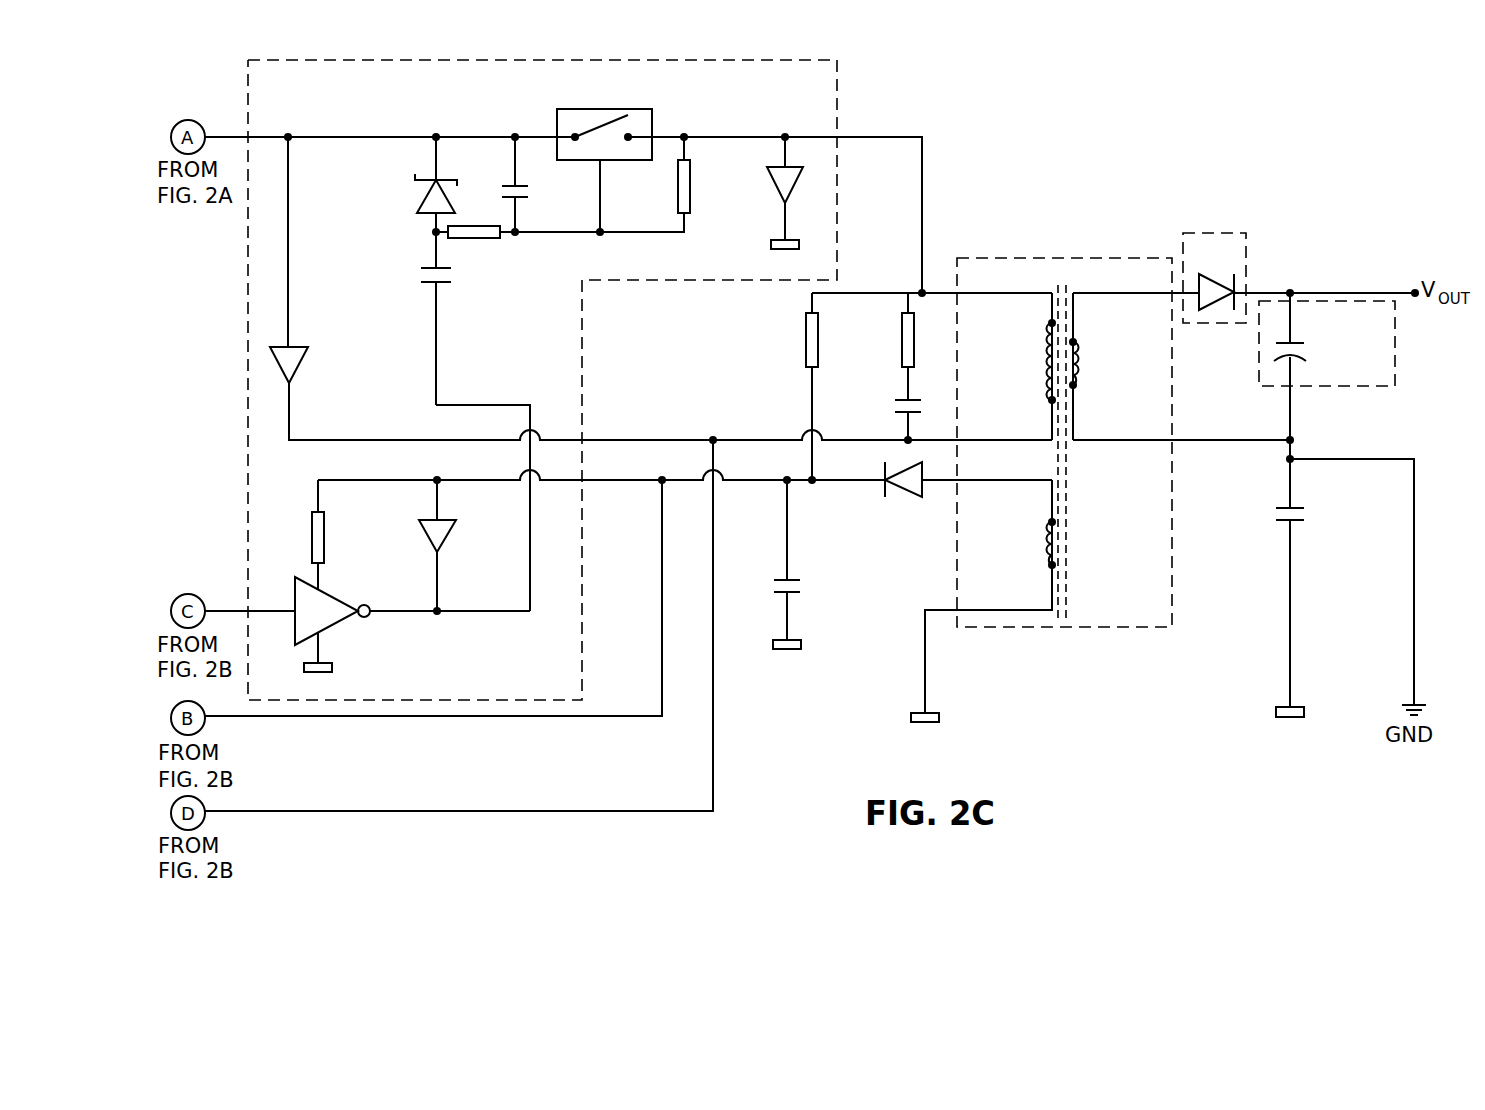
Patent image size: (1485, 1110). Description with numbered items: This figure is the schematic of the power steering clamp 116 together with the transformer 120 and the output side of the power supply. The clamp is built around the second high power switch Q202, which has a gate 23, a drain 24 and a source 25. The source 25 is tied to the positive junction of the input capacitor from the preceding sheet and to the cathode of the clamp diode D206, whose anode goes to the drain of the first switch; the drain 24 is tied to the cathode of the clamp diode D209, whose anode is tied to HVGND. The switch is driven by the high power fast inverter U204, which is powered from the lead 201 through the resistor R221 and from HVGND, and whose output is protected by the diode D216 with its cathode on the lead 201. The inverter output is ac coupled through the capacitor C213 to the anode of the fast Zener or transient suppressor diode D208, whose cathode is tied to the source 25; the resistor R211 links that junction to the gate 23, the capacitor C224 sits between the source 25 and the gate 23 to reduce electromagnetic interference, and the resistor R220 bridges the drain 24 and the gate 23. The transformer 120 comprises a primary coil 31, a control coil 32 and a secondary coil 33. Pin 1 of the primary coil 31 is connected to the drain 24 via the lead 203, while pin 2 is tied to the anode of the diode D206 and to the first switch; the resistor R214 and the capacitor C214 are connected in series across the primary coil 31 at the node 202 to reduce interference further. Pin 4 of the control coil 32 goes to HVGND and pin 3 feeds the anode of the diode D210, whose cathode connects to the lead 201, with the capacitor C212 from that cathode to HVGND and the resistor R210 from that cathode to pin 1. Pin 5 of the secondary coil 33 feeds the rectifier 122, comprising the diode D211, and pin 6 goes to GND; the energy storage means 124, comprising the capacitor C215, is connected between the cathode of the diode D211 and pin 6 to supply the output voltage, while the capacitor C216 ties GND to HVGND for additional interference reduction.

The power steering clamp 116 is at (837, 80).
The lead 201 is at (612, 483).
The primary winding return node 202 is at (933, 438).
The lead 203 is at (937, 287).
The transformer 120 is at (1029, 482).
The rectifier 122 is at (1244, 262).
The energy storage means 124 is at (1356, 366).
The gate 23 is at (600, 160).
The drain 24 is at (652, 137).
The source 25 is at (557, 137).
The pin 1 is at (1052, 323).
The pin 2 is at (1052, 400).
The pin 3 is at (1052, 522).
The pin 4 is at (1052, 565).
The pin 5 is at (1080, 346).
The pin 6 is at (1080, 385).
The primary coil 31 is at (1040, 358).
The control coil 32 is at (1038, 539).
The secondary coil 33 is at (1086, 358).
The second high power switch Q202 is at (596, 109).
The fast Zener or transient suppressor diode D208 is at (423, 196).
The resistor R211 is at (478, 240).
The capacitor C224 is at (536, 193).
The resistor R220 is at (678, 192).
The clamp diode D209 is at (772, 205).
The clamp diode D206 is at (303, 368).
The capacitor C213 is at (404, 265).
The resistor R221 is at (330, 540).
The protection diode D216 is at (450, 538).
The high power fast inverter U204 is at (345, 624).
The capacitor C212 is at (815, 583).
The resistor R210 is at (806, 346).
The resistor R214 is at (902, 346).
The capacitor C214 is at (888, 397).
The diode D210 is at (910, 500).
The diode D211 is at (1213, 274).
The capacitor C215 is at (1323, 338).
The capacitor C216 is at (1319, 506).